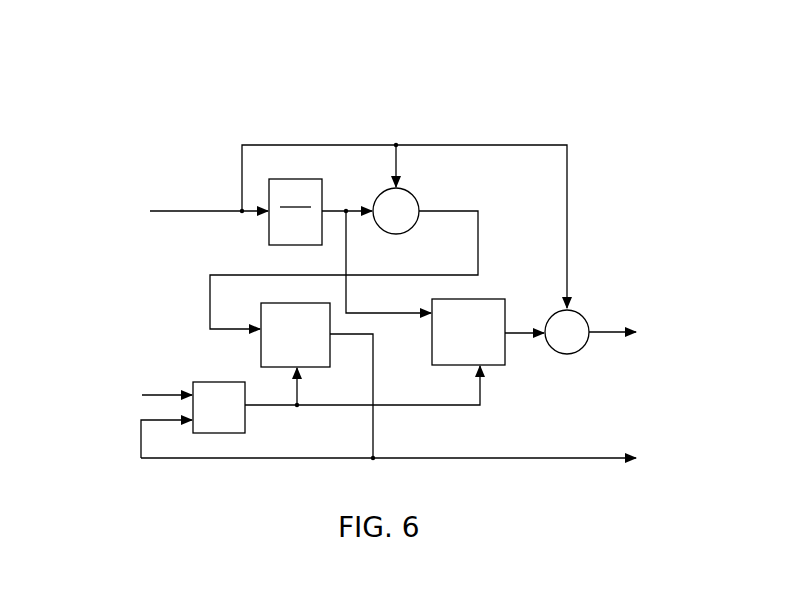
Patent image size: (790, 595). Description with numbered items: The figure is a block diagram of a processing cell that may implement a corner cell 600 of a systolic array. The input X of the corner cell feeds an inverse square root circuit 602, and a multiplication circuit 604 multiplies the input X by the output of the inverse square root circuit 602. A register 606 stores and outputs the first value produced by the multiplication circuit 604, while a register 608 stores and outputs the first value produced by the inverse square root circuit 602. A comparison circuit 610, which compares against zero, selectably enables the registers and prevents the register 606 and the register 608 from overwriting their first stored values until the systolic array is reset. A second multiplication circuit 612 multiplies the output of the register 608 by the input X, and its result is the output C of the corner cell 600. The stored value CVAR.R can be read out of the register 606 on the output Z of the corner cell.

The corner cell 600 is at (636, 92).
The inverse square root circuit 602 is at (310, 179).
The multiplication circuit 604 is at (413, 195).
The register 606 is at (261, 352).
The register 608 is at (505, 348).
The comparison circuit 610 is at (245, 433).
The multiplication circuit 612 is at (586, 343).